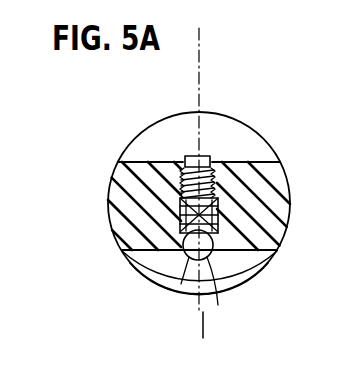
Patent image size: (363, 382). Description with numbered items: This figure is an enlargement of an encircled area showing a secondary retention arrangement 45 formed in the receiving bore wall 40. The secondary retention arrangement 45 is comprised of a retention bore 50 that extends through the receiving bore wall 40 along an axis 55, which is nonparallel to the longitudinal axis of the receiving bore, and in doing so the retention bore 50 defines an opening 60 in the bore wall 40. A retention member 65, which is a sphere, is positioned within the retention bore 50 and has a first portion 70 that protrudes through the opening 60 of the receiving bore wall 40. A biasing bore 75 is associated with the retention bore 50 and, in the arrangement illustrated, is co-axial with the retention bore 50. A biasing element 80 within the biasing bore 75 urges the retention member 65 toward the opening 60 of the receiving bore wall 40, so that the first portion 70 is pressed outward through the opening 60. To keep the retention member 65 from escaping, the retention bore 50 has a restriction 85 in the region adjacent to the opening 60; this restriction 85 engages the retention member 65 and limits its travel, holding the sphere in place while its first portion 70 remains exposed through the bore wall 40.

The receiving bore wall 40 is at (130, 263).
The secondary retention arrangement 45 is at (228, 85).
The retention bore 50 is at (216, 185).
The axis 55 is at (201, 68).
The opening 60 is at (152, 281).
The retention member 65 is at (218, 329).
The first portion 70 is at (181, 284).
The biasing bore 75 is at (218, 213).
The biasing element 80 is at (180, 218).
The restriction 85 is at (220, 296).